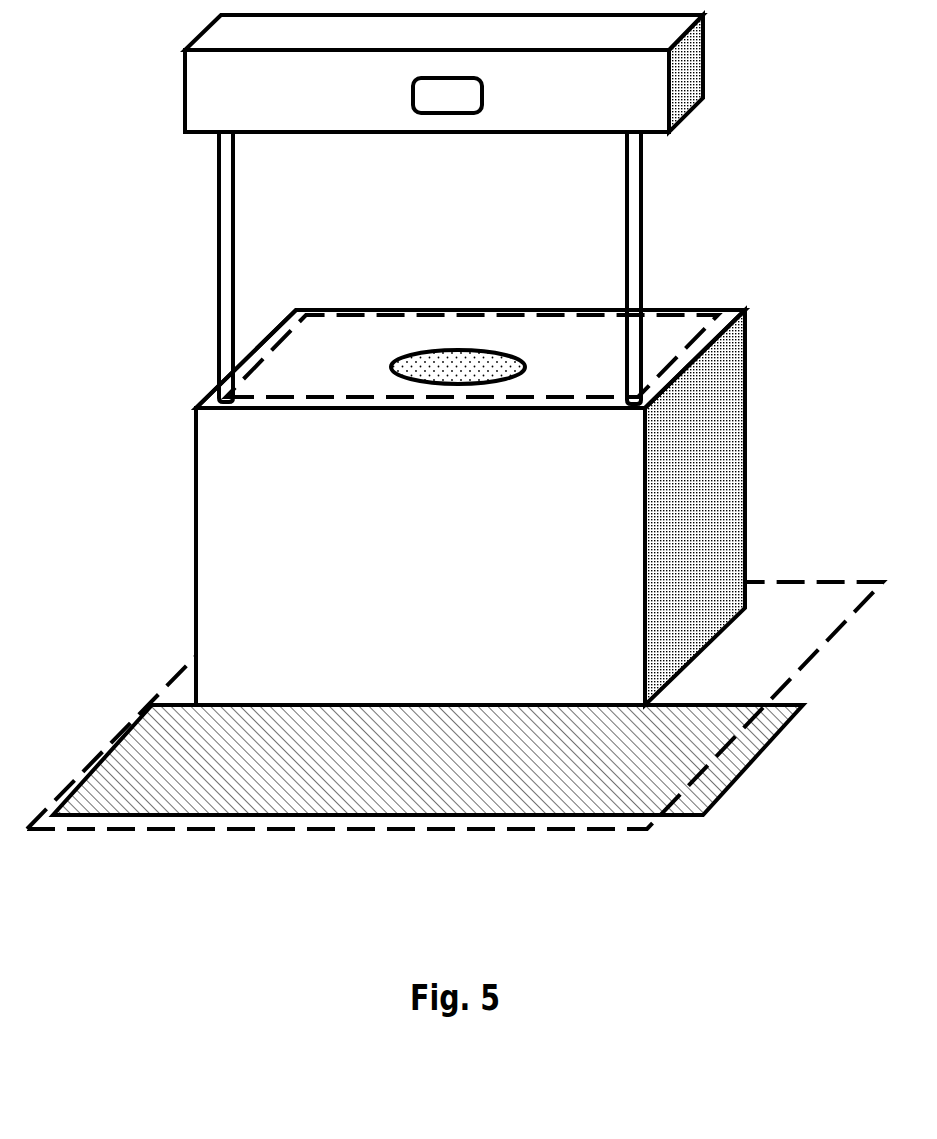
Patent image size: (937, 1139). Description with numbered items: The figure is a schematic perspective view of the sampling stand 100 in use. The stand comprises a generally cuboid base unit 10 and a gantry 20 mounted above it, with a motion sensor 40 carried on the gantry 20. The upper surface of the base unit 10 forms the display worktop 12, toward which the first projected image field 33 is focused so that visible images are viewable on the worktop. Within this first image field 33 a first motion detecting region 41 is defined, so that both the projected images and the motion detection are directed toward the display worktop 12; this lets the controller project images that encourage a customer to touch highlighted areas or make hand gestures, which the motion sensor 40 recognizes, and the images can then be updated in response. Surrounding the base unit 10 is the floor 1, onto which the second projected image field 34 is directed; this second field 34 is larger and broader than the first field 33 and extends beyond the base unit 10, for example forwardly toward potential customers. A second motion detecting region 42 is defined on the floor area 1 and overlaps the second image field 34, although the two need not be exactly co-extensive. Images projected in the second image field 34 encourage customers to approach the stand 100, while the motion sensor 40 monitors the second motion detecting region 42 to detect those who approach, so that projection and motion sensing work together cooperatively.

The floor 1 is at (455, 451).
The sampling stand 100 is at (495, 358).
The base unit 10 is at (732, 470).
The display worktop 12 is at (350, 308).
The gantry 20 is at (693, 58).
The first projected image field 33 is at (713, 312).
The second projected image field 34 is at (442, 832).
The motion sensor 40 is at (482, 93).
The first motion detecting region 41 is at (515, 358).
The second motion detecting region 42 is at (730, 787).